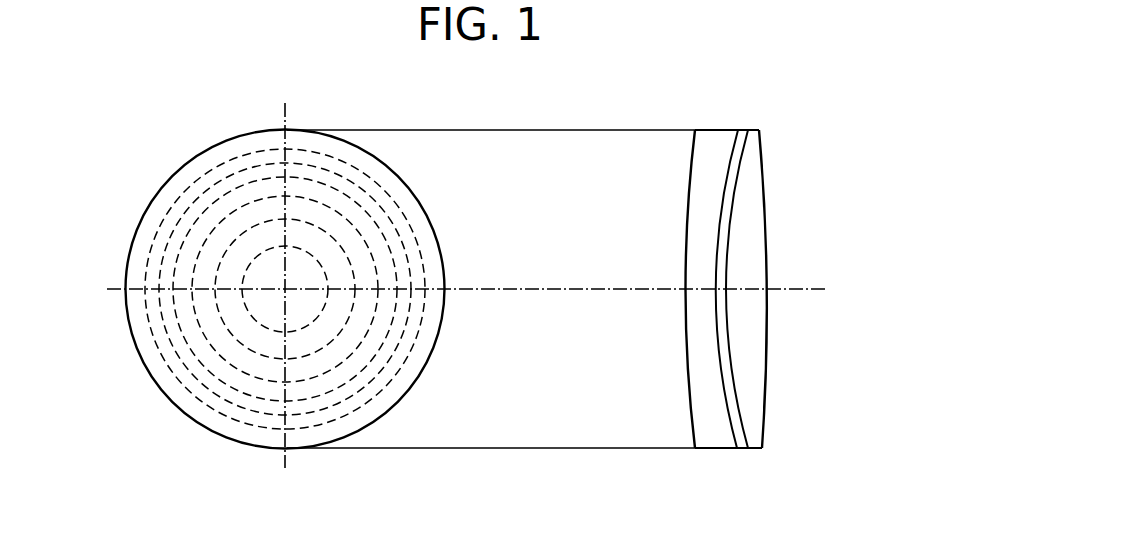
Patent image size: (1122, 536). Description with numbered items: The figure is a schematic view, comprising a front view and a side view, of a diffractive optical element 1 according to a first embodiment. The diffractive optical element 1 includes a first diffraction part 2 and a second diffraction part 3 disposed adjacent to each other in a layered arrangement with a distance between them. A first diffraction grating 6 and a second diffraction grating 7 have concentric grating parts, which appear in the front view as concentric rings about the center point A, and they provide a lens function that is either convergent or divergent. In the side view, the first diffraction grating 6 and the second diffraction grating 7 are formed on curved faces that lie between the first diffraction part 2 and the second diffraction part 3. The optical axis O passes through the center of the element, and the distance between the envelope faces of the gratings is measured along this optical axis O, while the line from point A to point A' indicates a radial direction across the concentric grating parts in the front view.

The diffractive optical element 1 is at (417, 383).
The first diffraction part 2 is at (383, 267).
The second diffraction part 3 is at (752, 177).
The first diffraction grating 6 is at (710, 243).
The second diffraction grating 7 is at (737, 289).
The center point on optical axis A is at (268, 305).
The radial position A' is at (375, 230).
The optical axis O is at (477, 285).